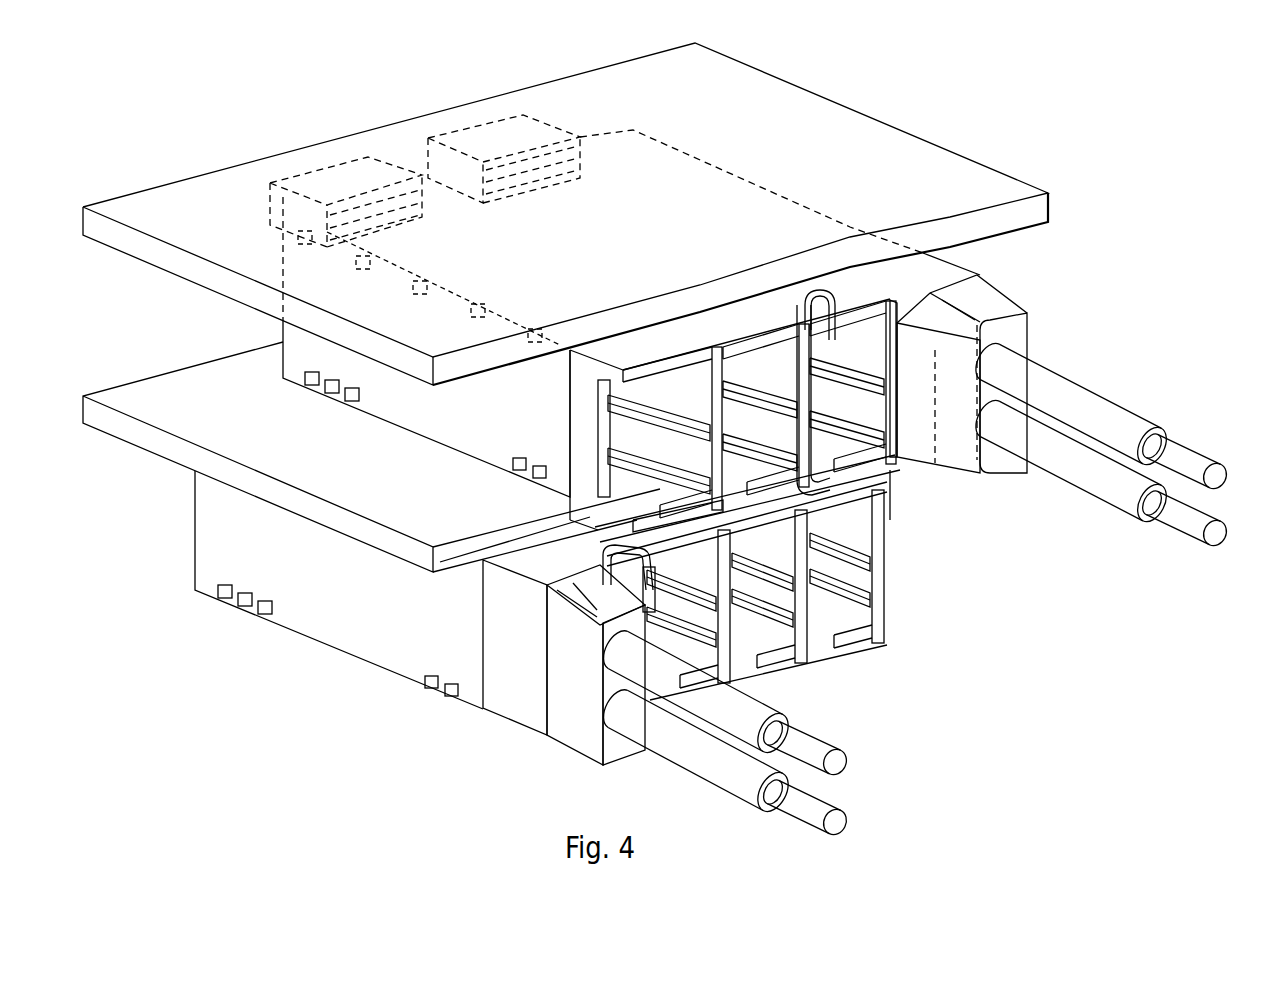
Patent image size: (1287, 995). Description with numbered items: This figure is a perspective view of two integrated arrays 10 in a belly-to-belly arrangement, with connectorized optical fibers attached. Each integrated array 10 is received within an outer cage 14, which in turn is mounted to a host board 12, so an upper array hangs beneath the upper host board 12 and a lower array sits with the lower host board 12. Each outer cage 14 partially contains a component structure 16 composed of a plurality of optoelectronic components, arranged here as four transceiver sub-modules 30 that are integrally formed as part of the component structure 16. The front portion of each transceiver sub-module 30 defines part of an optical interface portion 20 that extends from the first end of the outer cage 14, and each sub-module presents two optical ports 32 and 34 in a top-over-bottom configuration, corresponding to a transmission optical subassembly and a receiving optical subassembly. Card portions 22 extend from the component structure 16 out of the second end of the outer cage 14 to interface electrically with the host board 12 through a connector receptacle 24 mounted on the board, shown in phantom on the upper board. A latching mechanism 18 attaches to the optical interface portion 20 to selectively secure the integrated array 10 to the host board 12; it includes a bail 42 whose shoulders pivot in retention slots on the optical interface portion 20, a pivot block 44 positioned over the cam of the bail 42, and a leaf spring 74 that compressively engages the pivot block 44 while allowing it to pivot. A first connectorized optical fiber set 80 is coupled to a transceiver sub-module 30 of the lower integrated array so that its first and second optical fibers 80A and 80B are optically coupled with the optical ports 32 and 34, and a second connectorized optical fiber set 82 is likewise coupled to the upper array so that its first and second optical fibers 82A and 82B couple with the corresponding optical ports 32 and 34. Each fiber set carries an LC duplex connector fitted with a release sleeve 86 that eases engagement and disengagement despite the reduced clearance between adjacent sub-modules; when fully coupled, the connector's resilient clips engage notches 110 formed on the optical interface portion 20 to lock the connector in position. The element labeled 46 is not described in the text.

The integrated array 10 is at (1085, 285).
The host board 12 is at (153, 200).
The outer cage 14 is at (323, 372).
The component structure 16 is at (585, 472).
The latching mechanism 18 is at (590, 545).
The optical interface portion 20 is at (660, 333).
The card portion 22 is at (584, 185).
The connector receptacle 24 is at (335, 180).
The transceiver sub-module 30 is at (853, 318).
The optical port 32 is at (657, 395).
The optical port 34 is at (657, 482).
The bail 42 is at (805, 340).
The pivot block 44 is at (687, 538).
The latch arm 46 is at (830, 305).
The leaf spring 74 is at (625, 527).
The first connectorized optical fiber set 80 is at (754, 735).
The first optical fiber 80A is at (825, 813).
The second optical fiber 80B is at (825, 758).
The second connectorized optical fiber set 82 is at (1124, 427).
The first optical fiber 82A is at (1183, 440).
The second optical fiber 82B is at (1195, 535).
The release sleeve 86 is at (995, 300).
The notch 110 is at (596, 405).